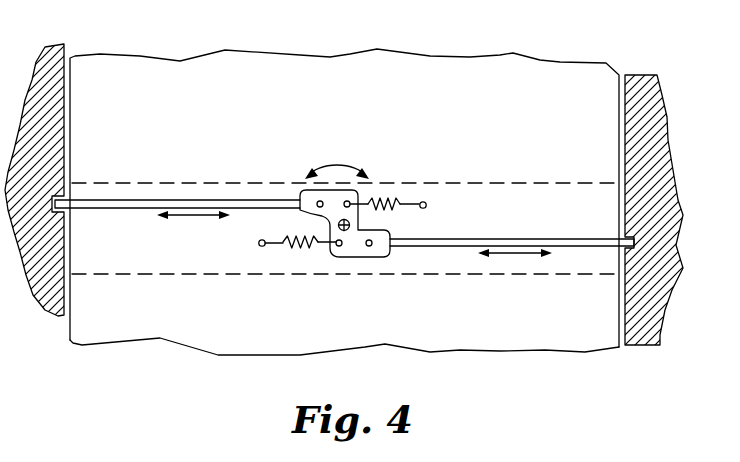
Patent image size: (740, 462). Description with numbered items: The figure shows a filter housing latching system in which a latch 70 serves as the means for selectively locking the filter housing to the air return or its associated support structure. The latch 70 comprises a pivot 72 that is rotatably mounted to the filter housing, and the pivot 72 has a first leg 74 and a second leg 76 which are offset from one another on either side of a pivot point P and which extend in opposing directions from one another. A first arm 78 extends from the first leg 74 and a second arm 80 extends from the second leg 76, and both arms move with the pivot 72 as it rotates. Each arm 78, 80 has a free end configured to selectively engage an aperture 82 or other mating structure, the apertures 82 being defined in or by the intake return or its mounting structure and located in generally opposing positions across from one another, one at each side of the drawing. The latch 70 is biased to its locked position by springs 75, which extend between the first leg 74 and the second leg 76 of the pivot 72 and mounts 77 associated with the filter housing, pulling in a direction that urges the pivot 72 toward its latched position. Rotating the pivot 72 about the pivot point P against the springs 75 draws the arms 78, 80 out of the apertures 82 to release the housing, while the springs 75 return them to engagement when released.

The latch 70 is at (356, 137).
The pivot 72 is at (339, 230).
The first leg 74 is at (300, 197).
The springs 75 is at (398, 204).
The second leg 76 is at (383, 253).
The mounts 77 is at (428, 204).
The first arm 78 is at (153, 199).
The second arm 80 is at (478, 237).
The aperture 82 is at (82, 192).
The pivot point P is at (303, 217).